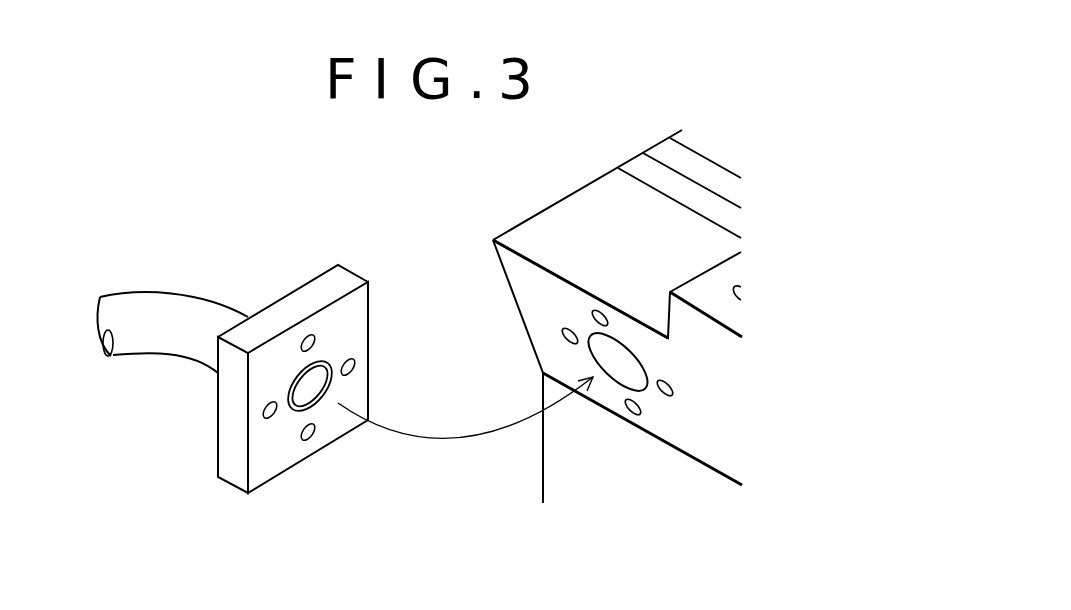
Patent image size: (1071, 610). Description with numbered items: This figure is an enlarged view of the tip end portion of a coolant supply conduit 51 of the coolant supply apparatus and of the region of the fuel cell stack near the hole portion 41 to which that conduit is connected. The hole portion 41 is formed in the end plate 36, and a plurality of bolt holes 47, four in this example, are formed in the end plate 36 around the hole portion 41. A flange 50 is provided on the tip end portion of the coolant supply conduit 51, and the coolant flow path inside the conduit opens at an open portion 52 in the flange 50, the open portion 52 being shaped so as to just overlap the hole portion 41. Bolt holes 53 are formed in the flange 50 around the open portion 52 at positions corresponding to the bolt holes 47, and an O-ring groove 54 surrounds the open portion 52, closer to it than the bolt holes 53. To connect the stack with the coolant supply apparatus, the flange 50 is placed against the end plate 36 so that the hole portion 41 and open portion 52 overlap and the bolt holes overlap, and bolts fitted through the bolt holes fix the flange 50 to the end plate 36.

The end plate 36 is at (548, 460).
The hole portion 41 is at (597, 335).
The bolt holes 47 is at (569, 336).
The flange 50 is at (331, 285).
The coolant supply conduit 51 is at (160, 304).
The open portion 52 is at (297, 402).
The bolt holes 53 is at (313, 434).
The O-ring groove 54 is at (292, 373).